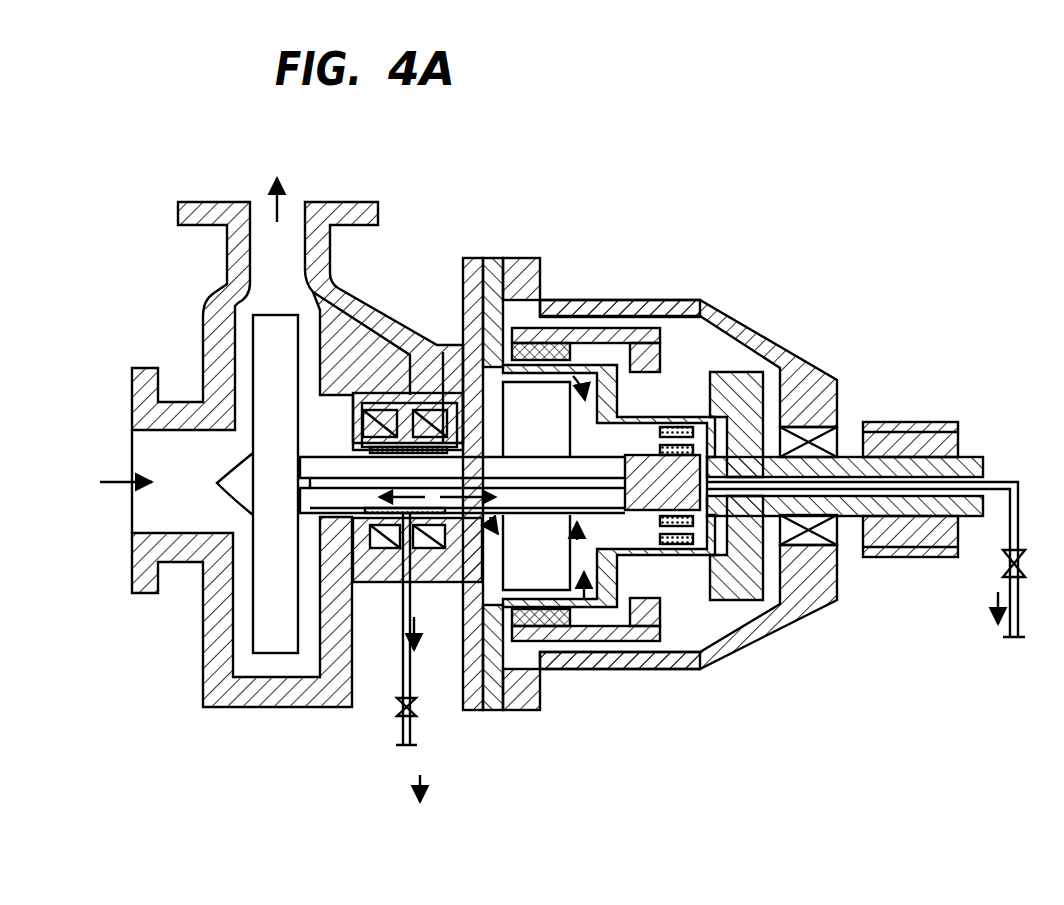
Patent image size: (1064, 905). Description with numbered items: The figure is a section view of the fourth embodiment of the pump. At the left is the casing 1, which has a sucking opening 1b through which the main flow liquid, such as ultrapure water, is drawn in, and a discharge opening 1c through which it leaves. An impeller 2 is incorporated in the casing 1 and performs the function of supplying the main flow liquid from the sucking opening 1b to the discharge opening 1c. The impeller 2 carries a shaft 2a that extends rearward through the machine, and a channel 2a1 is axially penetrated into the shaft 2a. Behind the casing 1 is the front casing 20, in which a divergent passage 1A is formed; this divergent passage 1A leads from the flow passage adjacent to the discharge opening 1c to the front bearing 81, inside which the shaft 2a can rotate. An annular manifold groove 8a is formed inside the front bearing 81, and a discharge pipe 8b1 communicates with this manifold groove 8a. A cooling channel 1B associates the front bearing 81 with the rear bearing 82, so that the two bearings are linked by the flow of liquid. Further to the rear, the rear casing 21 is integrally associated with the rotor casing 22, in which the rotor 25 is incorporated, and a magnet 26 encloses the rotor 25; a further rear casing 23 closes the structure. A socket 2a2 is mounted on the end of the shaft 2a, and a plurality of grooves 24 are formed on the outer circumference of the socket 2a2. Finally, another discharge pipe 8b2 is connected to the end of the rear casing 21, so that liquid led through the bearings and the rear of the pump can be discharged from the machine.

The casing 1 is at (363, 203).
The divergent passage 1A is at (333, 305).
The cooling channel 1B is at (497, 440).
The sucking opening 1b is at (130, 505).
The discharge opening 1c is at (293, 203).
The impeller 2 is at (272, 645).
The shaft 2a is at (597, 470).
The channel 2a1 is at (305, 450).
The socket 2a2 is at (630, 565).
The annular manifold groove 8a is at (437, 346).
The front bearing 81 is at (418, 404).
The rear bearing 82 is at (760, 362).
The discharge pipe 8b1 is at (400, 740).
The discharge pipe 8b2 is at (1008, 482).
The front casing 20 is at (440, 582).
The rear casing 21 is at (677, 410).
The rotor casing 22 is at (597, 367).
The rear casing 23 is at (790, 613).
The grooves 24 is at (590, 607).
The rotor 25 is at (490, 605).
The magnet 26 is at (532, 340).